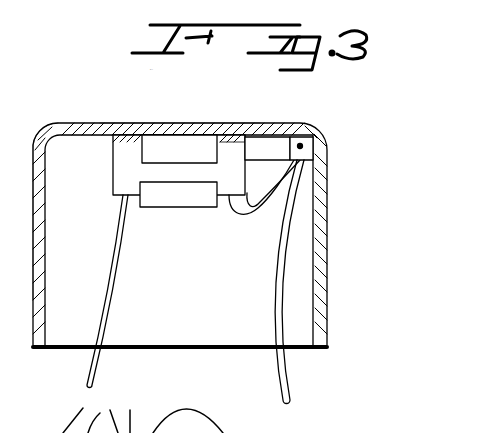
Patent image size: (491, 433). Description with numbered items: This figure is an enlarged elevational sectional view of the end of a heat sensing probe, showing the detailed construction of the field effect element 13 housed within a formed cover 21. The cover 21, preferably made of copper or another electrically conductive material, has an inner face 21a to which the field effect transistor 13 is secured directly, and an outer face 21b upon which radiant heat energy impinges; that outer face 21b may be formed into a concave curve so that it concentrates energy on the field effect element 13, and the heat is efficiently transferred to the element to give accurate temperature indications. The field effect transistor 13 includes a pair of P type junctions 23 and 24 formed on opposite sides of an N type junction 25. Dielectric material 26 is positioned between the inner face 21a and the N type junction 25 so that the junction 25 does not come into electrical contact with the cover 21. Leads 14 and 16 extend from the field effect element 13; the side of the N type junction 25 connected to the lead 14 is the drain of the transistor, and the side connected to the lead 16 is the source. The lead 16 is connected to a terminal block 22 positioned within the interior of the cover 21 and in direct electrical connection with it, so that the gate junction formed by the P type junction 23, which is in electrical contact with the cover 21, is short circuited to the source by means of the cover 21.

The field effect element 13 is at (113, 188).
The lead 14 is at (110, 278).
The lead 16 is at (268, 300).
The cover 21 is at (328, 213).
The inner face 21a is at (66, 135).
The outer face 21b is at (186, 126).
The terminal block 22 is at (302, 146).
The P type junction 23 is at (203, 142).
The P type junction 24 is at (200, 208).
The N type junction 25 is at (252, 166).
The dielectric material 26 is at (240, 137).